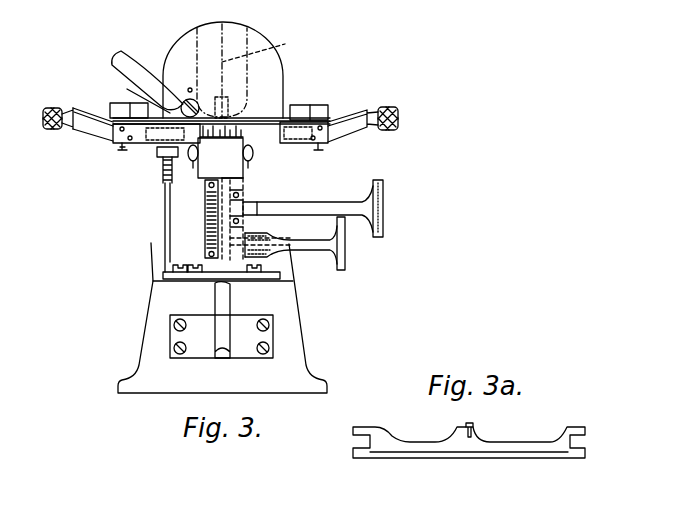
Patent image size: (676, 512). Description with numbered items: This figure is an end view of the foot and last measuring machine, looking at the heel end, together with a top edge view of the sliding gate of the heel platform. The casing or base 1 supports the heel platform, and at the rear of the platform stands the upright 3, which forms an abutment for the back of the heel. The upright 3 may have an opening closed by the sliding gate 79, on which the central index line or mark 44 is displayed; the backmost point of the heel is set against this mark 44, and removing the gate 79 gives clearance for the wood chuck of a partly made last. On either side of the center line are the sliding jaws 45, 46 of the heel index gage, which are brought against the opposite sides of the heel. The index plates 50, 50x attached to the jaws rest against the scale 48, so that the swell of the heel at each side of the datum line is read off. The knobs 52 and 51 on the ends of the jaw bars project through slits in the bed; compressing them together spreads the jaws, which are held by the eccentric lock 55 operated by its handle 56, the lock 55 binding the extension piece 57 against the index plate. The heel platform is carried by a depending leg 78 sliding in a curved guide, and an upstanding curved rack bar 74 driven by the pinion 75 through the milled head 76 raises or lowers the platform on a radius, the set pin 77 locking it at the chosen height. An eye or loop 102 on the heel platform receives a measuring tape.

In FIG. 3, the casing or base 1 is at (150, 302).
In FIG. 3, the upright 3 is at (223, 70).
In FIG. 3, the central index line or mark 44 is at (264, 50).
In FIG. 3A, the central index line or mark 44 is at (440, 421).
In FIG. 3, the sliding jaw or member 45 is at (92, 116).
In FIG. 3, the sliding jaw or member 46 is at (343, 116).
In FIG. 3, the second scale 48 is at (220, 152).
In FIG. 3, the index plate 50 is at (200, 142).
In FIG. 3, the index plate 50x is at (246, 133).
In FIG. 3, the knob 51 is at (193, 164).
In FIG. 3, the knob 52 is at (251, 158).
In FIG. 3, the eccentric lock 55 is at (190, 98).
In FIG. 3, the handle 56 is at (126, 61).
In FIG. 3, the extension piece 57 is at (136, 98).
In FIG. 3, the upstanding curved rack bar 74 is at (209, 233).
In FIG. 3, the pinion 75 is at (209, 208).
In FIG. 3, the milled head 76 is at (383, 186).
In FIG. 3A, the milled head 76 is at (522, 452).
In FIG. 3, the set pin 77 is at (313, 244).
In FIG. 3, the depending leg 78 is at (165, 186).
In FIG. 3, the sliding gate 79 is at (233, 32).
In FIG. 3, the eye or loop 102 is at (228, 108).